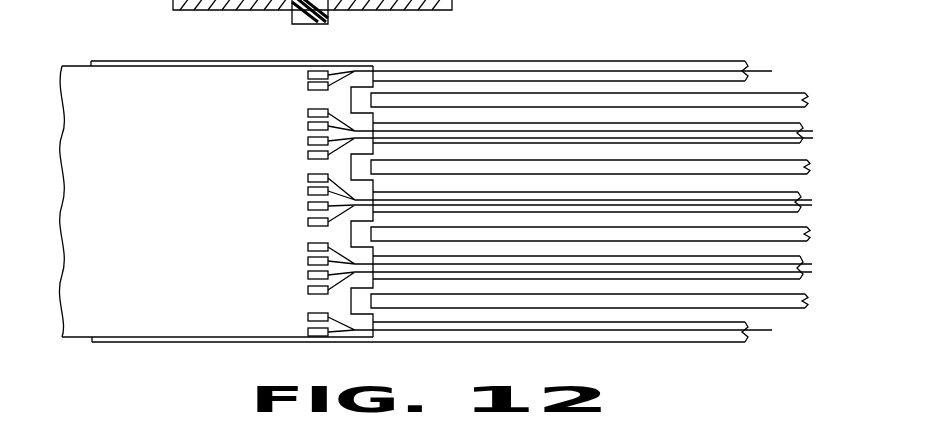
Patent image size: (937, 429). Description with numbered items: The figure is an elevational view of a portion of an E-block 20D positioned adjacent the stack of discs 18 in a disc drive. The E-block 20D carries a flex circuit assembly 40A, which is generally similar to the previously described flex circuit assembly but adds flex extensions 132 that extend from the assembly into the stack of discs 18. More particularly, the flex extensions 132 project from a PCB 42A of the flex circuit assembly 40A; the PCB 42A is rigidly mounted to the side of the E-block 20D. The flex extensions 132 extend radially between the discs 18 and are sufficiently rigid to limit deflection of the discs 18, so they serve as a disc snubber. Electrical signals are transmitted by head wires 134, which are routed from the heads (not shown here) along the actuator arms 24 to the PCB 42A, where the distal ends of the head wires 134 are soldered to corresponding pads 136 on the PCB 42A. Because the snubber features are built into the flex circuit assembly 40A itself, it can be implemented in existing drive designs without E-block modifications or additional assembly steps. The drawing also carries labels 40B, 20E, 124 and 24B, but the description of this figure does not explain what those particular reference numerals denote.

The flex circuit assembly 40A is at (81, 61).
The connector 40B is at (76, 428).
The E-block 20D is at (168, 45).
The cable segment 20E is at (169, 428).
The spacer block 124 is at (341, 26).
The pads 136 is at (287, 93).
The flex extensions 132 is at (362, 82).
The actuator arms 24 is at (510, 322).
The discs 18 is at (688, 103).
The head wires 134 is at (770, 322).
The PCB 42A is at (130, 305).
The conductor 24B is at (714, 425).